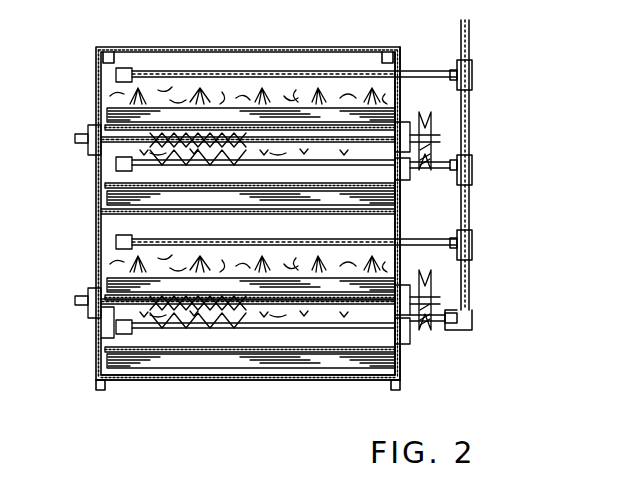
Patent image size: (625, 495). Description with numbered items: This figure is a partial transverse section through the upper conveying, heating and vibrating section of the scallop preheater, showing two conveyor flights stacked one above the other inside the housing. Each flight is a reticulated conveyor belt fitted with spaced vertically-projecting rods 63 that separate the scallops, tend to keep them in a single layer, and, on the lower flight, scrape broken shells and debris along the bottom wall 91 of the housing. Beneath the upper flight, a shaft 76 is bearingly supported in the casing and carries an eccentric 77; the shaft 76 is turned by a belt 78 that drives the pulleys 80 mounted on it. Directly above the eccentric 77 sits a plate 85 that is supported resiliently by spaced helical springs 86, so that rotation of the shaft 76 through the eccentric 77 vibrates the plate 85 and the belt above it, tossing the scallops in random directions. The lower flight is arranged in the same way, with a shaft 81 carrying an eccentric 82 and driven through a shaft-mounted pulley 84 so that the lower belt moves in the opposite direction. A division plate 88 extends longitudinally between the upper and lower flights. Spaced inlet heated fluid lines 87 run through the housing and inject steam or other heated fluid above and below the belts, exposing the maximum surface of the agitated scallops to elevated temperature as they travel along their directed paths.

The vertically-projecting rods 63 is at (120, 109).
The shaft 76 is at (93, 135).
The eccentric 77 is at (100, 153).
The belt 78 is at (110, 265).
The pulley 80 is at (432, 146).
The shaft 81 is at (75, 300).
The eccentric 82 is at (112, 309).
The pulley 84 is at (432, 303).
The plate 85 is at (268, 125).
The helical springs 86 is at (116, 154).
The heated fluid lines 87 is at (195, 68).
The division plate 88 is at (397, 233).
The bottom wall 91 is at (314, 380).